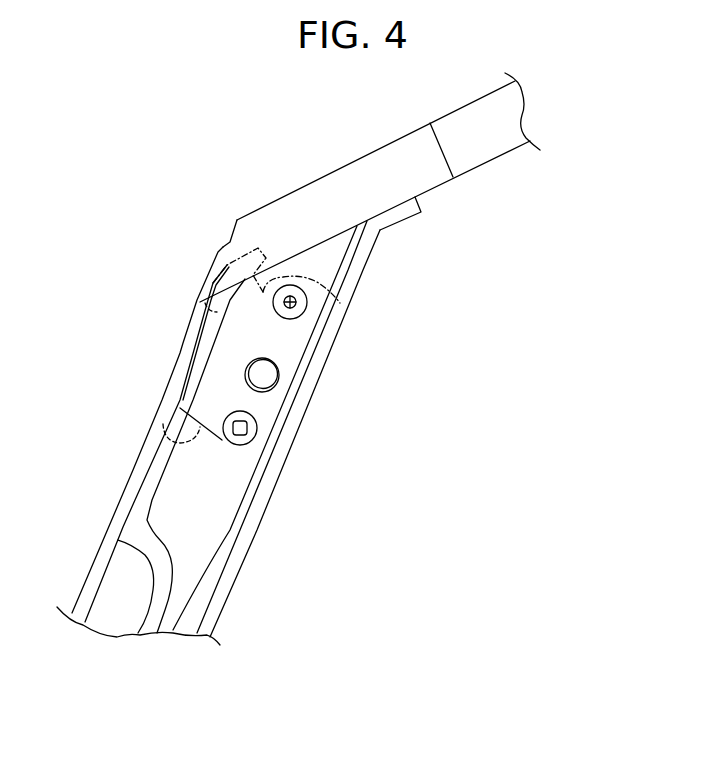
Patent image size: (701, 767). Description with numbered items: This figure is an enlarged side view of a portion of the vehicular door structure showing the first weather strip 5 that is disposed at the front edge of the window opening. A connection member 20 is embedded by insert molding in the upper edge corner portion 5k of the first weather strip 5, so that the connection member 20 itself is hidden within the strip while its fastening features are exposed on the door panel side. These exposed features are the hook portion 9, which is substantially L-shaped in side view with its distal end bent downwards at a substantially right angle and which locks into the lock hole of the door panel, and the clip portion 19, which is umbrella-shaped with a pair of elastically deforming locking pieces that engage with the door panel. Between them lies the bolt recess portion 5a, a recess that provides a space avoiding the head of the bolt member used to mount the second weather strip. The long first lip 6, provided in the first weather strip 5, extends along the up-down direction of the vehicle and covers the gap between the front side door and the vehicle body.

The first weather strip 5 is at (350, 161).
The upper edge corner portion 5k is at (298, 215).
The bolt recess portion 5a is at (265, 377).
The first lip 6 is at (205, 275).
The hook portion 9 is at (247, 430).
The clip portion 19 is at (307, 305).
The connection member 20 is at (162, 425).